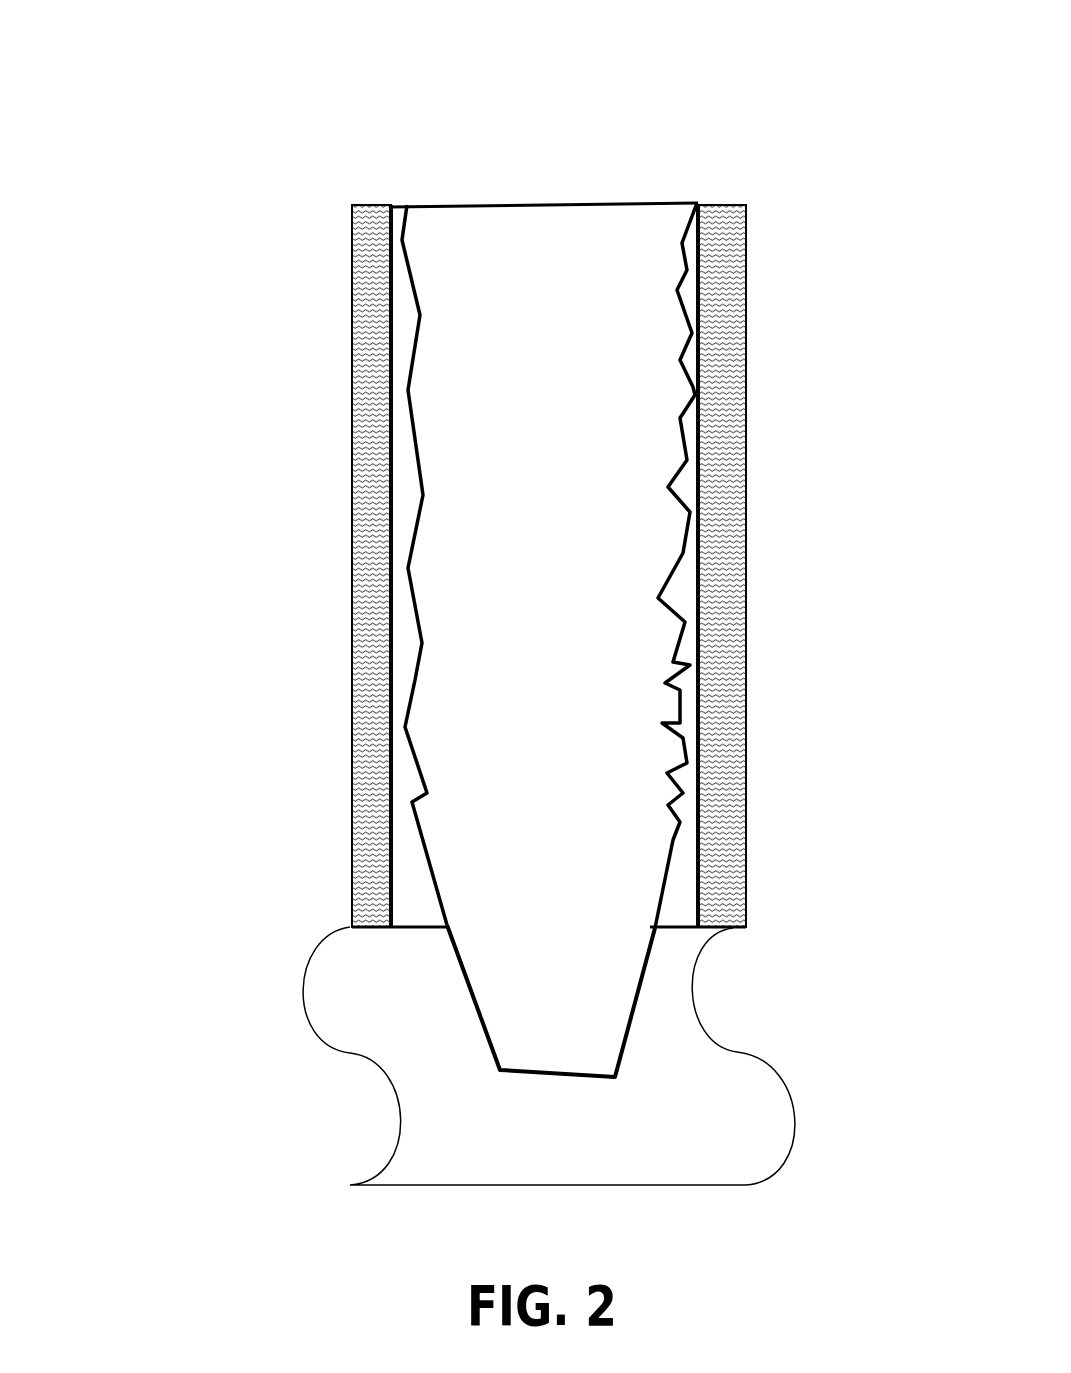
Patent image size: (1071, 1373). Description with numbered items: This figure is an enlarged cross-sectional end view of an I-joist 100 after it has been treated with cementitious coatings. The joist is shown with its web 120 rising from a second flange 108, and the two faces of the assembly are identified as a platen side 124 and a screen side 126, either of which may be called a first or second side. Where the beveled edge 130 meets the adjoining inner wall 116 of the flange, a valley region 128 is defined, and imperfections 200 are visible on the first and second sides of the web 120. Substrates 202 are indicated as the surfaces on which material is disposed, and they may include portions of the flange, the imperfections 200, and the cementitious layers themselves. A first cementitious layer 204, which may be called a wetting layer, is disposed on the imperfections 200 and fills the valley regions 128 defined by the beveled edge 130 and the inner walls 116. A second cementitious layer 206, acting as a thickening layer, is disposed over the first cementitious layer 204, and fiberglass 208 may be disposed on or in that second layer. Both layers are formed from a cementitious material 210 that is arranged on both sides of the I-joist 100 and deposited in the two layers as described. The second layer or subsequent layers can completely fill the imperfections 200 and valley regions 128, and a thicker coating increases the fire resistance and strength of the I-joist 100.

The I-joist 100 is at (205, 99).
The second flange 108 is at (549, 1056).
The inner wall 116 is at (657, 927).
The web 120 is at (544, 362).
The platen side 124 is at (272, 566).
The screen side 126 is at (778, 546).
The valley regions 128 is at (402, 900).
The beveled edges 130 is at (647, 960).
The imperfections 200 is at (421, 643).
The substrates 202 is at (445, 918).
The first cementitious layer 204 is at (683, 245).
The second cementitious layer 206 is at (718, 406).
The fiberglass 208 is at (365, 419).
The cementitious material 210 is at (393, 201).